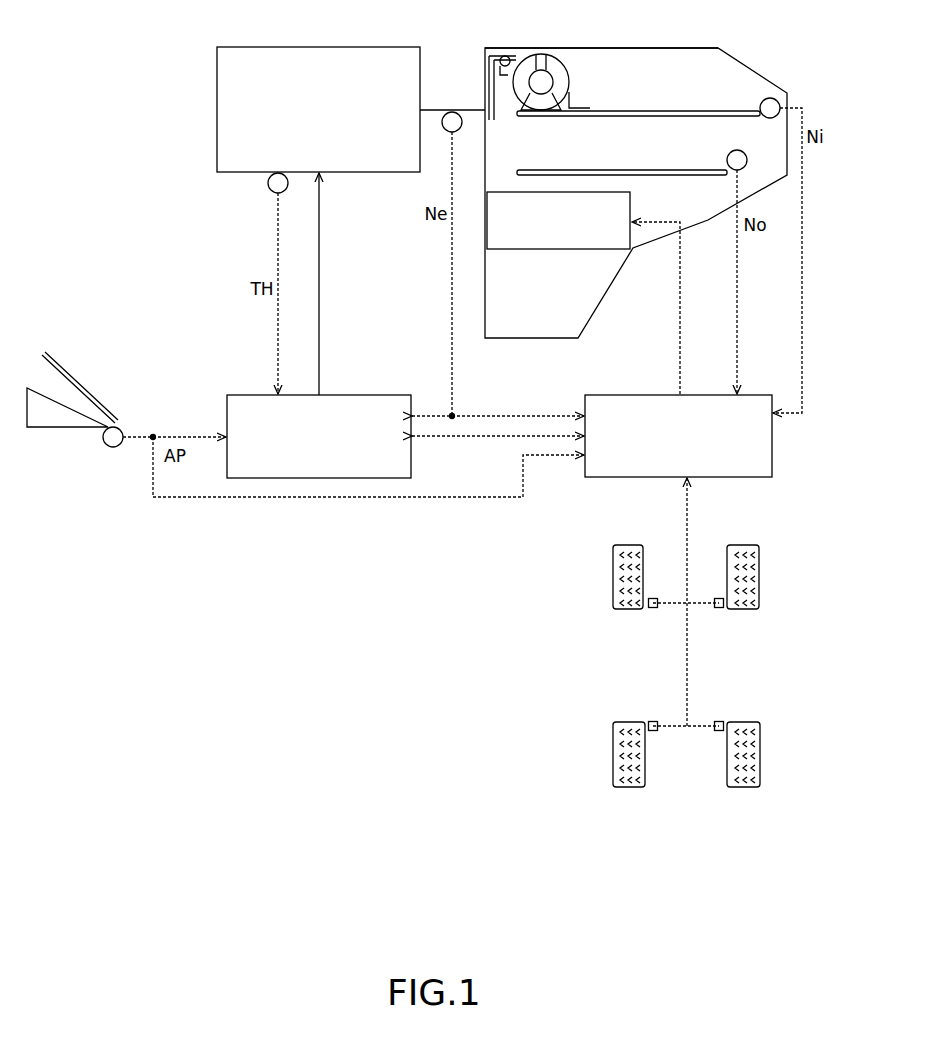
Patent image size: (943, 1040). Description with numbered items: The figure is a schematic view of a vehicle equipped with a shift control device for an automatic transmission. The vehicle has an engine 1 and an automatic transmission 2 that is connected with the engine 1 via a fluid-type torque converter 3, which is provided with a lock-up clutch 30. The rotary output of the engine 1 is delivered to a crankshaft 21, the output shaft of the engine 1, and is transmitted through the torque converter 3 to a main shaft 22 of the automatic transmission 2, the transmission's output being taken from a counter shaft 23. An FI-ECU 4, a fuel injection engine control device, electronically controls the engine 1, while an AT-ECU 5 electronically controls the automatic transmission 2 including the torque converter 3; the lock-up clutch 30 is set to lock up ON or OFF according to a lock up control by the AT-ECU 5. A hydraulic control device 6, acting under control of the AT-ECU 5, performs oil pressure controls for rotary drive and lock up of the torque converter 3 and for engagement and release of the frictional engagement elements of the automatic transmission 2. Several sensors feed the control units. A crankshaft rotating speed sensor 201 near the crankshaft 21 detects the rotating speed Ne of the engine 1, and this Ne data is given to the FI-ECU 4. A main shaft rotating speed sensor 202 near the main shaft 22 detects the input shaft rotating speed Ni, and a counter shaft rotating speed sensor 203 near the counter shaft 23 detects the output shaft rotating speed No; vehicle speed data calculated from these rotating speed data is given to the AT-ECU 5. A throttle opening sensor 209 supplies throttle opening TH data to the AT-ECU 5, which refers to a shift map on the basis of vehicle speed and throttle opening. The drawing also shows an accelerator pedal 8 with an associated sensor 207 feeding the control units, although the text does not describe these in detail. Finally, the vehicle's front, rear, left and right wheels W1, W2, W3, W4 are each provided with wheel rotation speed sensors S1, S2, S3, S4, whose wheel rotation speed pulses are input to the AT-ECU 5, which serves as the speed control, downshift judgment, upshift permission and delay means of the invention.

The engine 1 is at (382, 46).
The automatic transmission 2 is at (742, 47).
The torque converter 3 is at (580, 46).
The lock-up clutch 30 is at (480, 68).
The crankshaft 21 is at (431, 108).
The main shaft 22 is at (657, 110).
The counter shaft 23 is at (530, 170).
The crankshaft rotating speed sensor 201 is at (451, 133).
The main shaft rotating speed sensor 202 is at (778, 99).
The counter shaft rotating speed sensor 203 is at (746, 153).
The throttle opening sensor 209 is at (270, 191).
The accelerator pedal opening sensor 207 is at (126, 430).
The accelerator pedal 8 is at (60, 362).
The FI-ECU 4 is at (392, 394).
The AT-ECU 5 is at (603, 394).
The hydraulic control device 6 is at (556, 250).
The wheel W1 is at (613, 583).
The wheel W2 is at (759, 583).
The wheel W3 is at (613, 760).
The wheel W4 is at (760, 760).
The wheel rotation speed sensor S1 is at (654, 608).
The wheel rotation speed sensor S2 is at (719, 608).
The wheel rotation speed sensor S3 is at (653, 721).
The wheel rotation speed sensor S4 is at (719, 721).